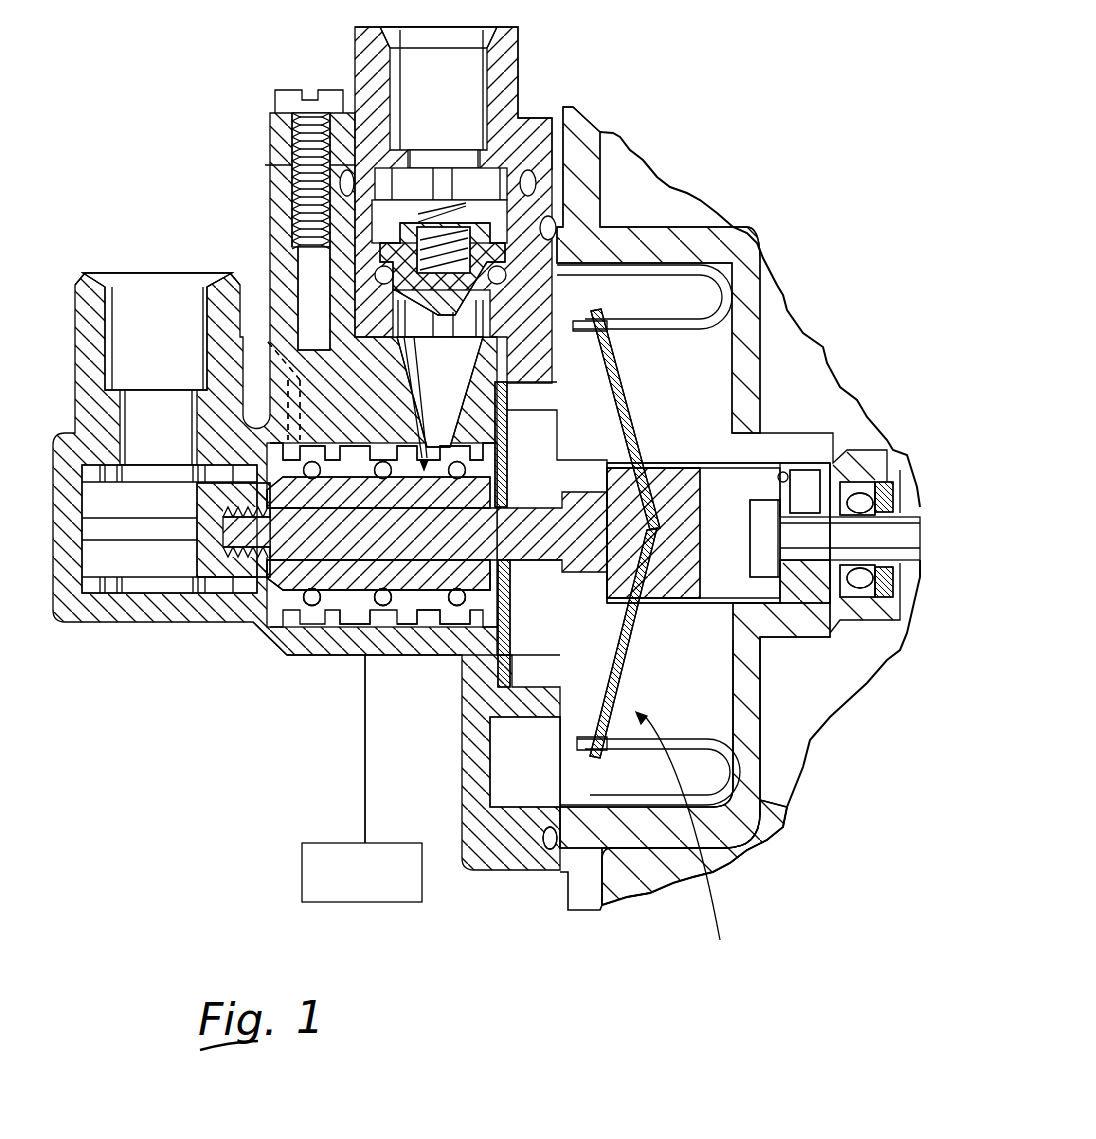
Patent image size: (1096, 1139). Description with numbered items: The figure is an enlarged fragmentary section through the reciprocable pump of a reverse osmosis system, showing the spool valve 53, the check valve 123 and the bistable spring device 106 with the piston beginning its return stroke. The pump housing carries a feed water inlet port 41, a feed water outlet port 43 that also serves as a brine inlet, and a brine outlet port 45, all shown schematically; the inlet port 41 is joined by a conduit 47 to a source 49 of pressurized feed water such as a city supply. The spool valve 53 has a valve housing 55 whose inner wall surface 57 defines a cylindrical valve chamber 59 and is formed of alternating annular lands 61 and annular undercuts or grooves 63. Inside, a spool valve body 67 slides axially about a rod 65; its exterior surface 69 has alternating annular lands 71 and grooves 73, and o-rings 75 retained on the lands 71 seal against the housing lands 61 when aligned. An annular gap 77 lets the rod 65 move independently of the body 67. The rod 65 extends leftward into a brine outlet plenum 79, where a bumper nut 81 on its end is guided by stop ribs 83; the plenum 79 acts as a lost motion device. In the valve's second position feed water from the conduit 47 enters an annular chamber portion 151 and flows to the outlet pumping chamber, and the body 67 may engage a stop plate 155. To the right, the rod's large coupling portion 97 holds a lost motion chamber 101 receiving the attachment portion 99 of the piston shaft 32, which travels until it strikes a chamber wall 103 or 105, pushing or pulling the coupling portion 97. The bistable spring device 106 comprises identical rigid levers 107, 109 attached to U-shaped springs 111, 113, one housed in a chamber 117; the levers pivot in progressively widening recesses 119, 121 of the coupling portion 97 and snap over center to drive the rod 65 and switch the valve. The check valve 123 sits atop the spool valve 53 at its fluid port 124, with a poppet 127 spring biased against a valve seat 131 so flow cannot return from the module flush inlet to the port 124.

The piston shaft 32 is at (918, 562).
The feed water inlet port 41 is at (378, 656).
The feed water outlet port 43 is at (262, 335).
The brine outlet port 45 is at (145, 290).
The conduit 47 is at (367, 800).
The source 49 is at (413, 903).
The spool valve 53 is at (303, 622).
The valve housing 55 is at (423, 627).
The inner wall surface 57 is at (277, 447).
The valve chamber 59 is at (262, 596).
The annular lands 61 is at (356, 627).
The annular undercuts or grooves 63 is at (400, 627).
The rod 65 is at (217, 530).
The spool valve body 67 is at (333, 628).
The exterior surface 69 is at (412, 415).
The annular lands 71 is at (262, 472).
The grooves 73 is at (268, 378).
The o-rings 75 is at (466, 606).
The annular gap 77 is at (503, 560).
The brine outlet plenum 79 is at (143, 553).
The bumper nut 81 is at (217, 560).
The stop ribs 83 is at (100, 480).
The coupling portion 97 is at (753, 607).
The attachment portion 99 is at (772, 587).
The lost motion chamber 101 is at (723, 565).
The chamber wall 103 is at (750, 476).
The chamber wall 105 is at (803, 463).
The bistable spring device 106 is at (767, 808).
The lever 107 is at (620, 378).
The lever 109 is at (698, 845).
The U-shaped spring 111 is at (733, 274).
The U-shaped spring 113 is at (720, 735).
The chamber 117 is at (727, 722).
The recess 119 is at (667, 483).
The recess 121 is at (660, 588).
The check valve 123 is at (512, 70).
The fluid port 124 is at (440, 452).
The poppet 127 is at (490, 227).
The valve seat 131 is at (505, 268).
The annular chamber portion 151 is at (348, 628).
The stop plate 155 is at (525, 783).